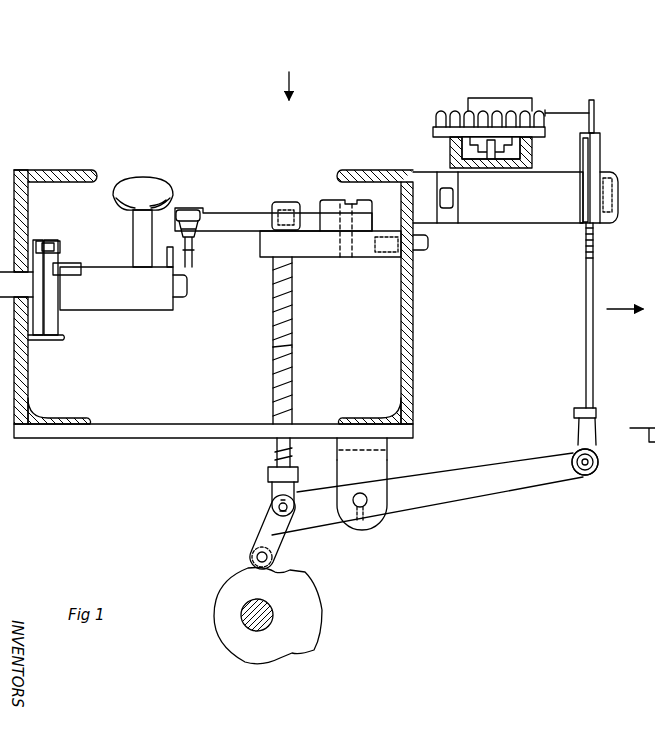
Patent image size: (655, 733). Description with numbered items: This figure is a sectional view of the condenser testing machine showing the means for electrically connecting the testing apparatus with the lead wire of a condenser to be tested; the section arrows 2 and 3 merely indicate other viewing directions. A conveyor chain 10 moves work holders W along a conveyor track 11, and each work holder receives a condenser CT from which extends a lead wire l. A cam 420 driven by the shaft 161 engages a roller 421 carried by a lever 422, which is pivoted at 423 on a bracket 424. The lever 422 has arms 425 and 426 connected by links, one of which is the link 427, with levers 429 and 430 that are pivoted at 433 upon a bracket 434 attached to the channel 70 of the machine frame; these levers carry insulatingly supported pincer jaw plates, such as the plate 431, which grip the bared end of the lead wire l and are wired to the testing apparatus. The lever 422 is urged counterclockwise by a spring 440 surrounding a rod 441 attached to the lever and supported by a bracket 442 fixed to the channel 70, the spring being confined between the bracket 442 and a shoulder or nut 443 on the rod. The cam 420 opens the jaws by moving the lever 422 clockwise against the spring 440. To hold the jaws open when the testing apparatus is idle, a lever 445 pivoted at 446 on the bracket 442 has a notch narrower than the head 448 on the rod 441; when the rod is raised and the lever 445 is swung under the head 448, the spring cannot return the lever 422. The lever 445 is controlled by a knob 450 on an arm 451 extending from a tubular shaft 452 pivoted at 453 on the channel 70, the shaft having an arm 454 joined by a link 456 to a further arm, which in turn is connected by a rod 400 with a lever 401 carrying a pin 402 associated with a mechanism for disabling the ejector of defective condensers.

The channel 70 is at (59, 171).
The rod 400 is at (55, 240).
The lever 401 is at (52, 297).
The pin 402 is at (76, 276).
The knob 450 is at (148, 176).
The arm 451 is at (133, 245).
The tubular shaft 452 is at (126, 310).
The pivot 453 is at (188, 288).
The arm 454 is at (167, 252).
The link 456 is at (197, 247).
The lever 445 is at (236, 212).
The head 448 is at (299, 203).
The pivot 446 is at (352, 203).
The bracket 442 is at (333, 258).
The rod 441 is at (296, 317).
The spring 440 is at (296, 356).
The bracket 424 is at (336, 460).
The shoulder or nut 443 is at (266, 477).
The pivot 423 is at (362, 498).
The lever 422 is at (330, 533).
The roller 421 is at (250, 559).
The cam 420 is at (326, 590).
The shaft 161 is at (241, 615).
The bracket 434 is at (512, 224).
The work holder W is at (433, 121).
The condenser CT is at (501, 98).
The conveyor track 11 is at (450, 151).
The conveyor chain 10 is at (488, 160).
The pincer jaw plate 431 is at (586, 110).
The lead wire l is at (596, 110).
The lever 430 is at (601, 148).
The lever 429 is at (583, 153).
The pivot 433 is at (618, 198).
The link 427 is at (586, 324).
The arm 425 is at (526, 458).
The arm 426 is at (585, 462).
The section arrow 2 is at (625, 298).
The section arrow 3 is at (289, 75).